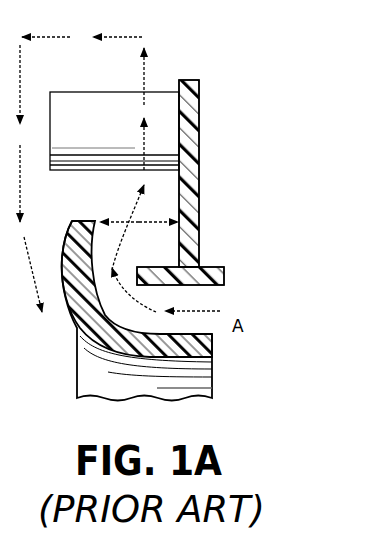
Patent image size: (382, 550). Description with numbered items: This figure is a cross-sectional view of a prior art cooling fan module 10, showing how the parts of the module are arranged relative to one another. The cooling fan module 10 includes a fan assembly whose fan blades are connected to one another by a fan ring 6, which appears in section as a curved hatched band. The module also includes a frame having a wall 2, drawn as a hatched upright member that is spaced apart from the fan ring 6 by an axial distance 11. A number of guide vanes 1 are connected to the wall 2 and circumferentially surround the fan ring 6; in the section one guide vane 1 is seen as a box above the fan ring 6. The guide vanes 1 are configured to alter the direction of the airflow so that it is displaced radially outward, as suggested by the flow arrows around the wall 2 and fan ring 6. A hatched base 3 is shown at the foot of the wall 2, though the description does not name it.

The cooling fan module 10 is at (200, 41).
The guide vanes 1 is at (110, 92).
The wall 2 is at (199, 122).
The mandrel base 3 is at (190, 285).
The fan ring 6 is at (63, 227).
The axial distance 11 is at (153, 211).